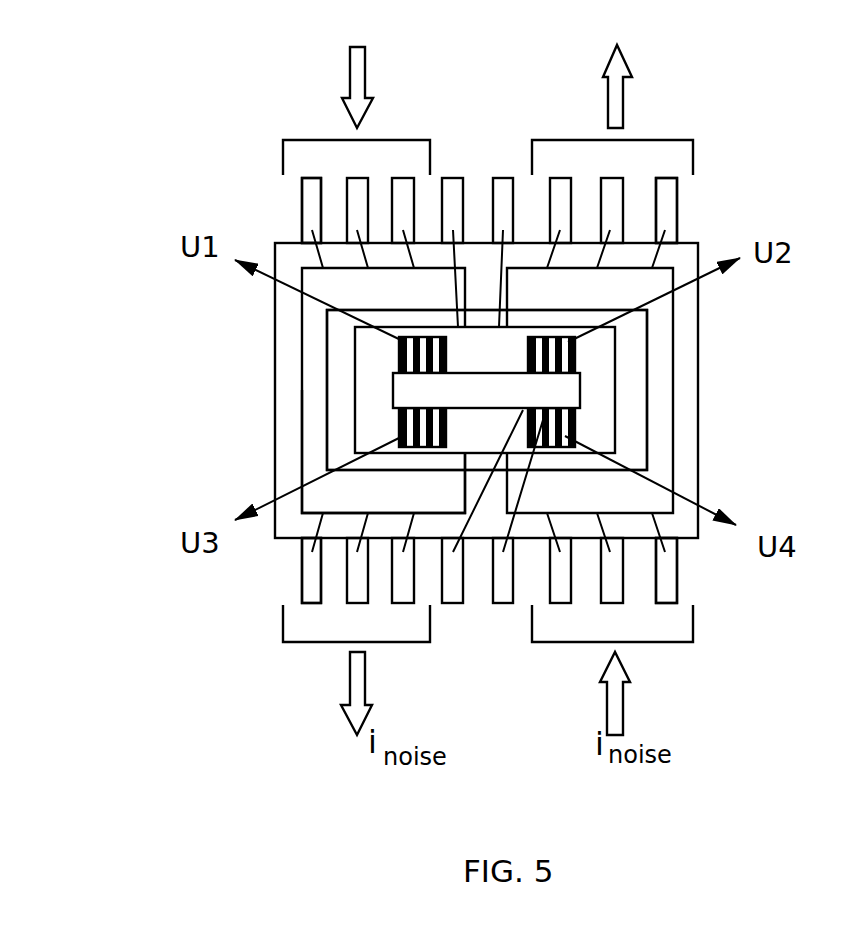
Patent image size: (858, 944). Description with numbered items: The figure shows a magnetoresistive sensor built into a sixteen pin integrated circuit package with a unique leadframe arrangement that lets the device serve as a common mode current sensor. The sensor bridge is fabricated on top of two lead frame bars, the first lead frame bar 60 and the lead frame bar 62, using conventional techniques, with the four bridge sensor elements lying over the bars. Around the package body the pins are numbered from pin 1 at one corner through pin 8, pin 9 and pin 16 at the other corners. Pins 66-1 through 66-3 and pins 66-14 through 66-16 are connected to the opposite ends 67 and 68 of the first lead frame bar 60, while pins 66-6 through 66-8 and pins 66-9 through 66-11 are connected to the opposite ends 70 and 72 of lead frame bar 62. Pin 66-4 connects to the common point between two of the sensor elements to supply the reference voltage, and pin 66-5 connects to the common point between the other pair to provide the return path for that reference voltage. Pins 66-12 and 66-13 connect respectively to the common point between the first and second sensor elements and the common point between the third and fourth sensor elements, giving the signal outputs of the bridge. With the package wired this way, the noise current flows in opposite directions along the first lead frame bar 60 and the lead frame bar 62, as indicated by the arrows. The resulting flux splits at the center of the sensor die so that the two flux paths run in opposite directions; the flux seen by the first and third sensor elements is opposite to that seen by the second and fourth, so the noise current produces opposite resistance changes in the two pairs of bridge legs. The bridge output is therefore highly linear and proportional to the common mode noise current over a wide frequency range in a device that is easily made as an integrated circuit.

The first lead frame bar 60 is at (660, 382).
The lead frame bar 62 is at (313, 383).
The end of first lead frame bar 67 is at (662, 321).
The right lead frame portion 68 is at (662, 450).
The end of lead frame bar 70 is at (310, 322).
The end of lead frame bar 72 is at (312, 452).
The pin 66-1 is at (678, 193).
The pin 66-3 is at (562, 177).
The pin 66-4 is at (506, 177).
The pin 66-5 is at (455, 177).
The pin 66-6 is at (402, 177).
The pin 66-8 is at (302, 190).
The pin 66-9 is at (302, 593).
The pin 66-11 is at (403, 603).
The pin 66-12 is at (453, 603).
The pin 66-13 is at (502, 603).
The pin 66-14 is at (563, 603).
The pin 66-16 is at (677, 580).
The pin number 1 is at (691, 210).
The pin number 8 is at (289, 210).
The pin number 9 is at (290, 570).
The pin number 16 is at (701, 570).